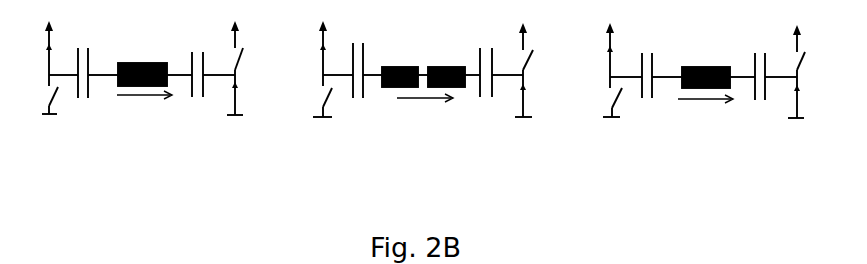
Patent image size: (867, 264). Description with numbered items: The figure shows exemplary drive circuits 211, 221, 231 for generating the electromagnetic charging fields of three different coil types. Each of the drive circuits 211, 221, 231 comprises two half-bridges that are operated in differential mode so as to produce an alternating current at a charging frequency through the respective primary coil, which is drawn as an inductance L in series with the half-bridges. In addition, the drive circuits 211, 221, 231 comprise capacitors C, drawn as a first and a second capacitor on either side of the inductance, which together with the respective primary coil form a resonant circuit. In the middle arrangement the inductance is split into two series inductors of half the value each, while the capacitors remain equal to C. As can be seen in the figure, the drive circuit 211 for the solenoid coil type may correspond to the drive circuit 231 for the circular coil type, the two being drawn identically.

The drive circuit 211 is at (132, 132).
The drive circuit 221 is at (405, 138).
The drive circuit 231 is at (692, 145).